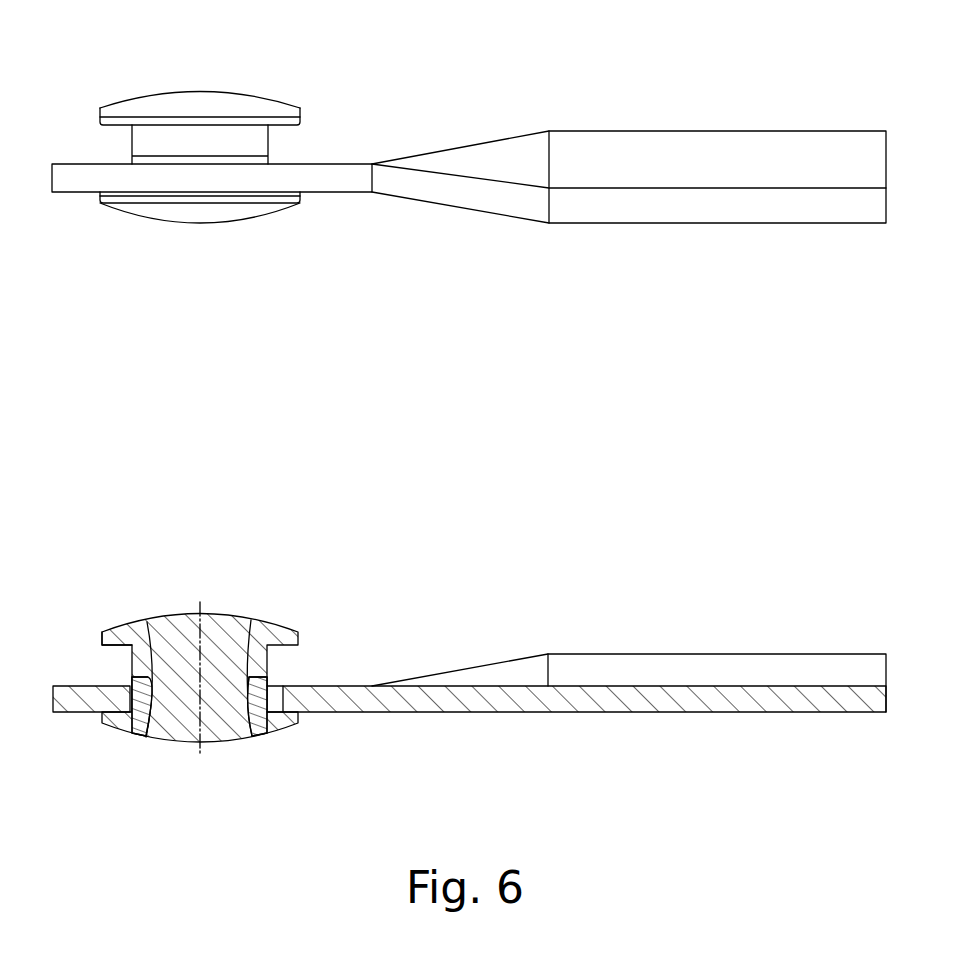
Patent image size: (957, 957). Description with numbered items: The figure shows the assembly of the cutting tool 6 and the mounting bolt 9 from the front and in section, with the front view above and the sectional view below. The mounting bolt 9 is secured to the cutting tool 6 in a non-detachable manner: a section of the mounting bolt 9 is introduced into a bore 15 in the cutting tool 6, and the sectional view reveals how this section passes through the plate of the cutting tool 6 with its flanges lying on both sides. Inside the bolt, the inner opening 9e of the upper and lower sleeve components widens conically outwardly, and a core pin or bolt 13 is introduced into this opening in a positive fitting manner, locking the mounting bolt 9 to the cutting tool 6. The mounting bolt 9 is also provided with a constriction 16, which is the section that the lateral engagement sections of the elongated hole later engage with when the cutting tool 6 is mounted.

The cutting tool 6 is at (796, 160).
The mounting bolt 9 is at (254, 107).
The core pin or bolt 13 is at (221, 720).
The inner opening 9e is at (140, 680).
The constriction 16 is at (127, 668).
The bore 15 is at (273, 692).